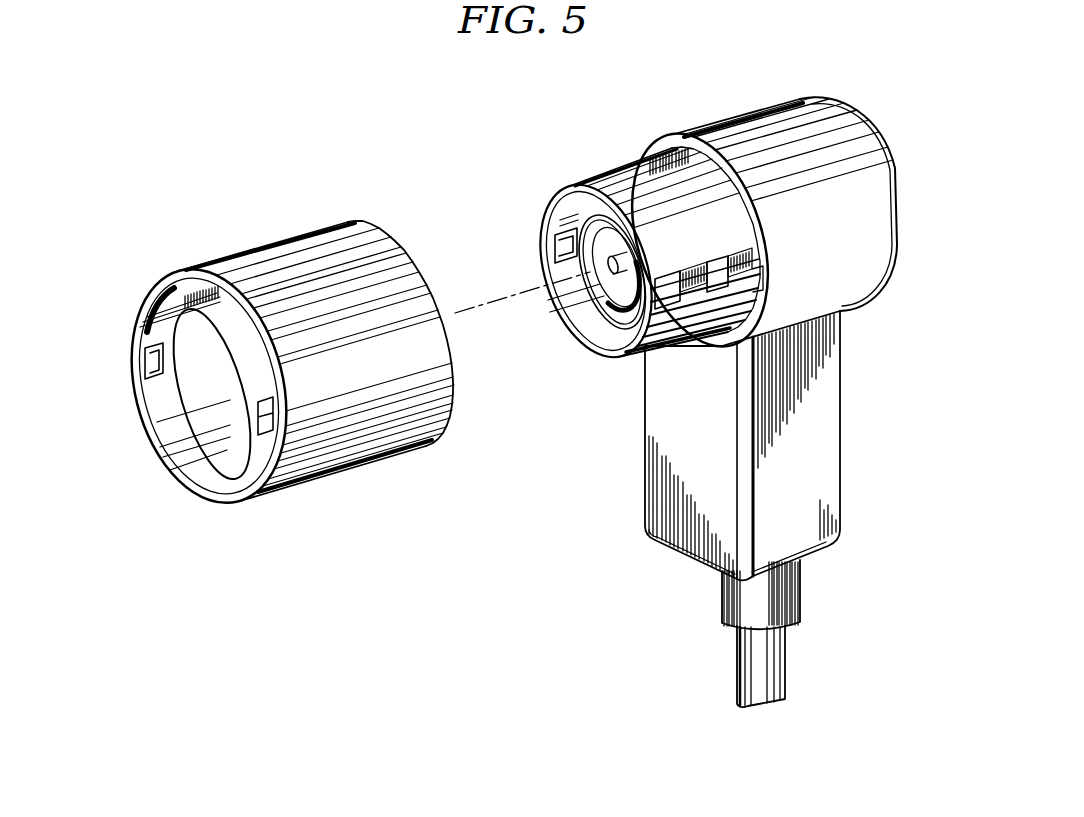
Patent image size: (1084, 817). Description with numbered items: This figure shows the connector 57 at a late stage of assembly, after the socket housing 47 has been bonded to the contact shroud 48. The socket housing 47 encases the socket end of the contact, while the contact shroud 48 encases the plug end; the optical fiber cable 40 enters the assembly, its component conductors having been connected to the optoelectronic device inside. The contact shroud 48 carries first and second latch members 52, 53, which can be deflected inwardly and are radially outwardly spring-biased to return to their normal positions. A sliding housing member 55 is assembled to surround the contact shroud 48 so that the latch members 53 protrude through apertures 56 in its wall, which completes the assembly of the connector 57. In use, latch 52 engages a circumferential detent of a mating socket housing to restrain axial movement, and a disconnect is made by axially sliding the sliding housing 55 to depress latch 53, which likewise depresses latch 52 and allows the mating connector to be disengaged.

The optical fiber cable 40 is at (777, 668).
The socket housing 47 is at (877, 195).
The contact shroud 48 is at (615, 172).
The first latch member 52 is at (667, 307).
The second latch member 53 is at (717, 290).
The sliding housing member 55 is at (358, 466).
The apertures 56 is at (152, 365).
The connector 57 is at (860, 388).